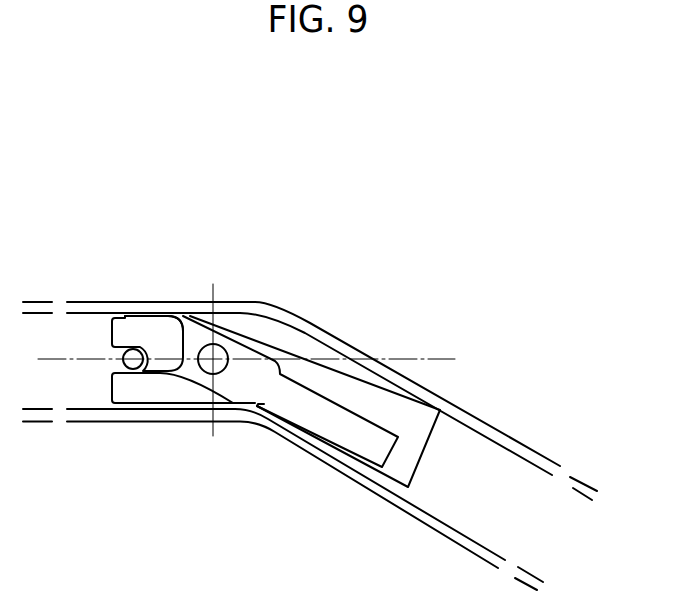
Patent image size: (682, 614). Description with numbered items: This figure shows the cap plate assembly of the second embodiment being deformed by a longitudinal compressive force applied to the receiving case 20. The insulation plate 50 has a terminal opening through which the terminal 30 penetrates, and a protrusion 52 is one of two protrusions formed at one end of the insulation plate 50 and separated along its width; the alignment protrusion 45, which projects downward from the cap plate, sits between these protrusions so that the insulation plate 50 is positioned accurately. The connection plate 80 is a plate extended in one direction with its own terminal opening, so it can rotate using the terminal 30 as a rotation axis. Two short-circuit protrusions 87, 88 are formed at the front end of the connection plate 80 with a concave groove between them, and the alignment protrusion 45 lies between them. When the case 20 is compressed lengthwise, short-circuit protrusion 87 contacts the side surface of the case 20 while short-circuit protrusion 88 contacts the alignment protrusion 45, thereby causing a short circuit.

The receiving case 20 is at (387, 373).
The terminal 30 is at (217, 364).
The alignment protrusion 45 is at (133, 365).
The insulation plate 50 is at (427, 415).
The protrusion 52 is at (115, 328).
The connection plate 80 is at (287, 387).
The short-circuit protrusion 87 is at (157, 318).
The short-circuit protrusion 88 is at (160, 376).